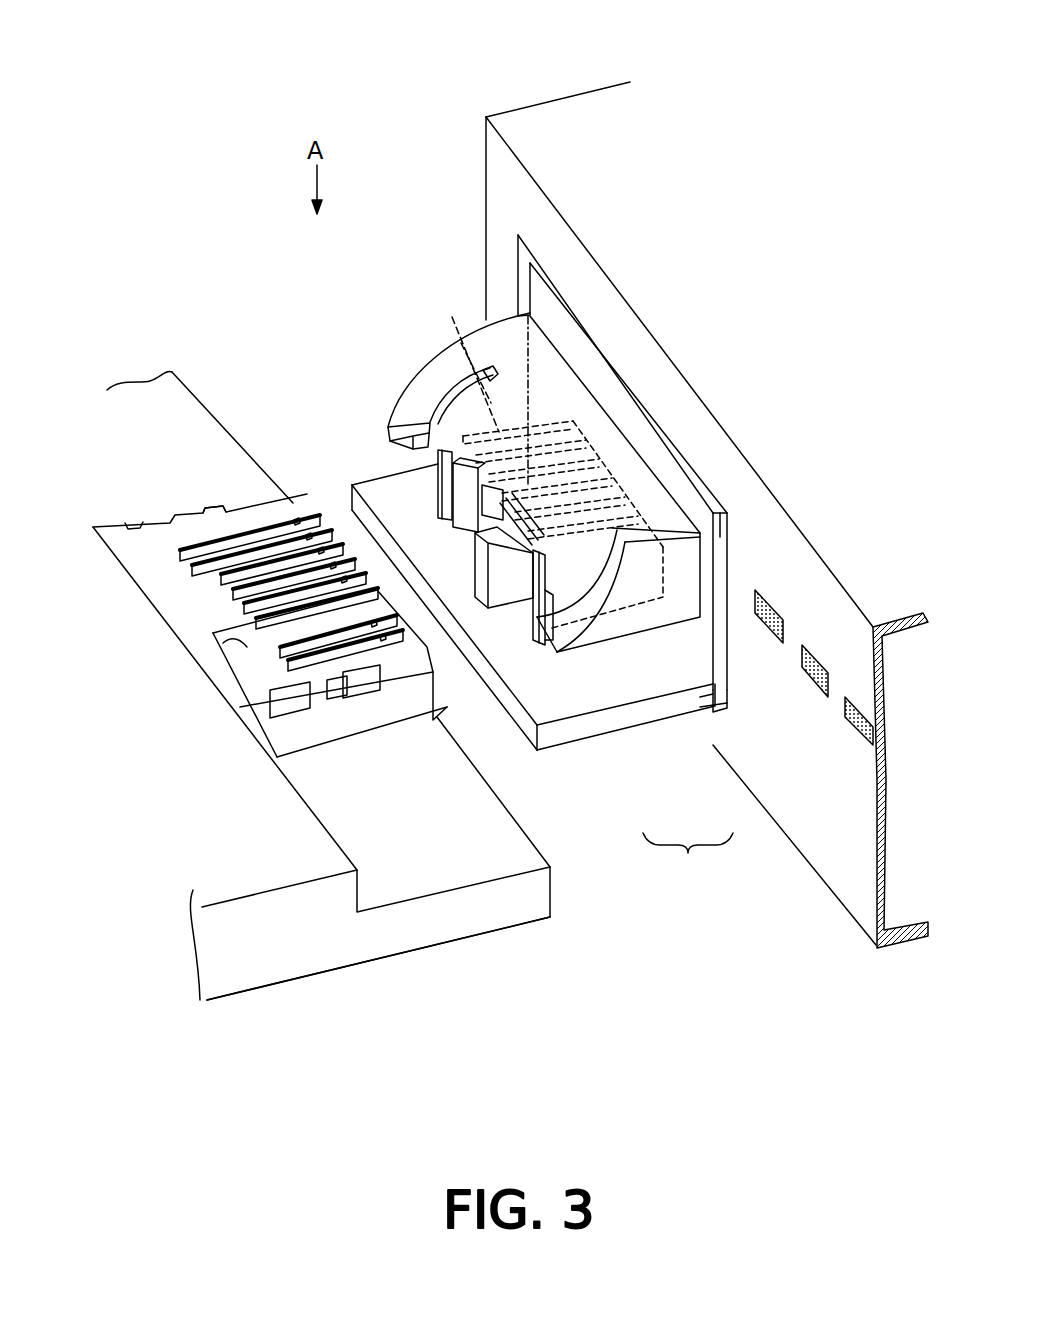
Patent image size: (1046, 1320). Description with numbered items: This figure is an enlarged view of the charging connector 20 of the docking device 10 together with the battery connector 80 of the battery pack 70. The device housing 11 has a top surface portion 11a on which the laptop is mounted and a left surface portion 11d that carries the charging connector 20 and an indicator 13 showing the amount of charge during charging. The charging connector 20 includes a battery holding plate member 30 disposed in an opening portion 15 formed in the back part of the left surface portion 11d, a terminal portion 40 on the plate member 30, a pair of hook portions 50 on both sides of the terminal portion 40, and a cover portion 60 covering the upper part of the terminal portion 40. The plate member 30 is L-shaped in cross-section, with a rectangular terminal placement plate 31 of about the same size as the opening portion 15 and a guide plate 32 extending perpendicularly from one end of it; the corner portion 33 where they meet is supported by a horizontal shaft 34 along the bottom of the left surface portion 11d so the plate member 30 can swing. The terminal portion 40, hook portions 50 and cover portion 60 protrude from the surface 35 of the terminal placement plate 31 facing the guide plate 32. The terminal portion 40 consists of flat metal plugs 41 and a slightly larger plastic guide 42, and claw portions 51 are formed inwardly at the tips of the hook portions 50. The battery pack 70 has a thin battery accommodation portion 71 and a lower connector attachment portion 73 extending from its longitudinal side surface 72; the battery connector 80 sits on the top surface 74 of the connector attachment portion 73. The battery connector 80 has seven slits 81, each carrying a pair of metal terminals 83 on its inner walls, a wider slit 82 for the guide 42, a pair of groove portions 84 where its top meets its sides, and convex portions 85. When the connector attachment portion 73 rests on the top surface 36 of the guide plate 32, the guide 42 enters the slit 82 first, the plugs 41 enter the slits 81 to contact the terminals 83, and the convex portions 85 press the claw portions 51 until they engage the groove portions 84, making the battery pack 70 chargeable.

The docking device 10 is at (576, 75).
The device housing 11 is at (533, 138).
The top surface portion 11a is at (848, 500).
The left surface portion 11d is at (823, 827).
The indicator 13 is at (808, 658).
The opening portion 15 is at (727, 527).
The charging connector 20 is at (403, 262).
The battery holding plate member 30 is at (688, 858).
The terminal placement plate 31 is at (730, 712).
The guide plate 32 is at (617, 727).
The corner portion 33 is at (703, 717).
The horizontal shaft 34 is at (720, 700).
The surface 35 is at (640, 440).
The top surface 36 is at (557, 703).
The terminal portion 40 is at (400, 490).
The plug 41 is at (550, 457).
The guide 42 is at (510, 582).
The hook portion 50 is at (427, 390).
The claw portion 51 is at (420, 430).
The cover portion 60 is at (547, 362).
The battery pack 70 is at (145, 355).
The battery accommodation portion 71 is at (287, 940).
The longitudinal side surface 72 is at (143, 575).
The connector attachment portion 73 is at (477, 913).
The top surface 74 is at (190, 393).
The battery connector 80 is at (224, 462).
The slit 81 is at (290, 567).
The slit 82 is at (223, 647).
The terminal 83 is at (373, 630).
The groove portion 84 is at (123, 530).
The convex portion 85 is at (203, 527).